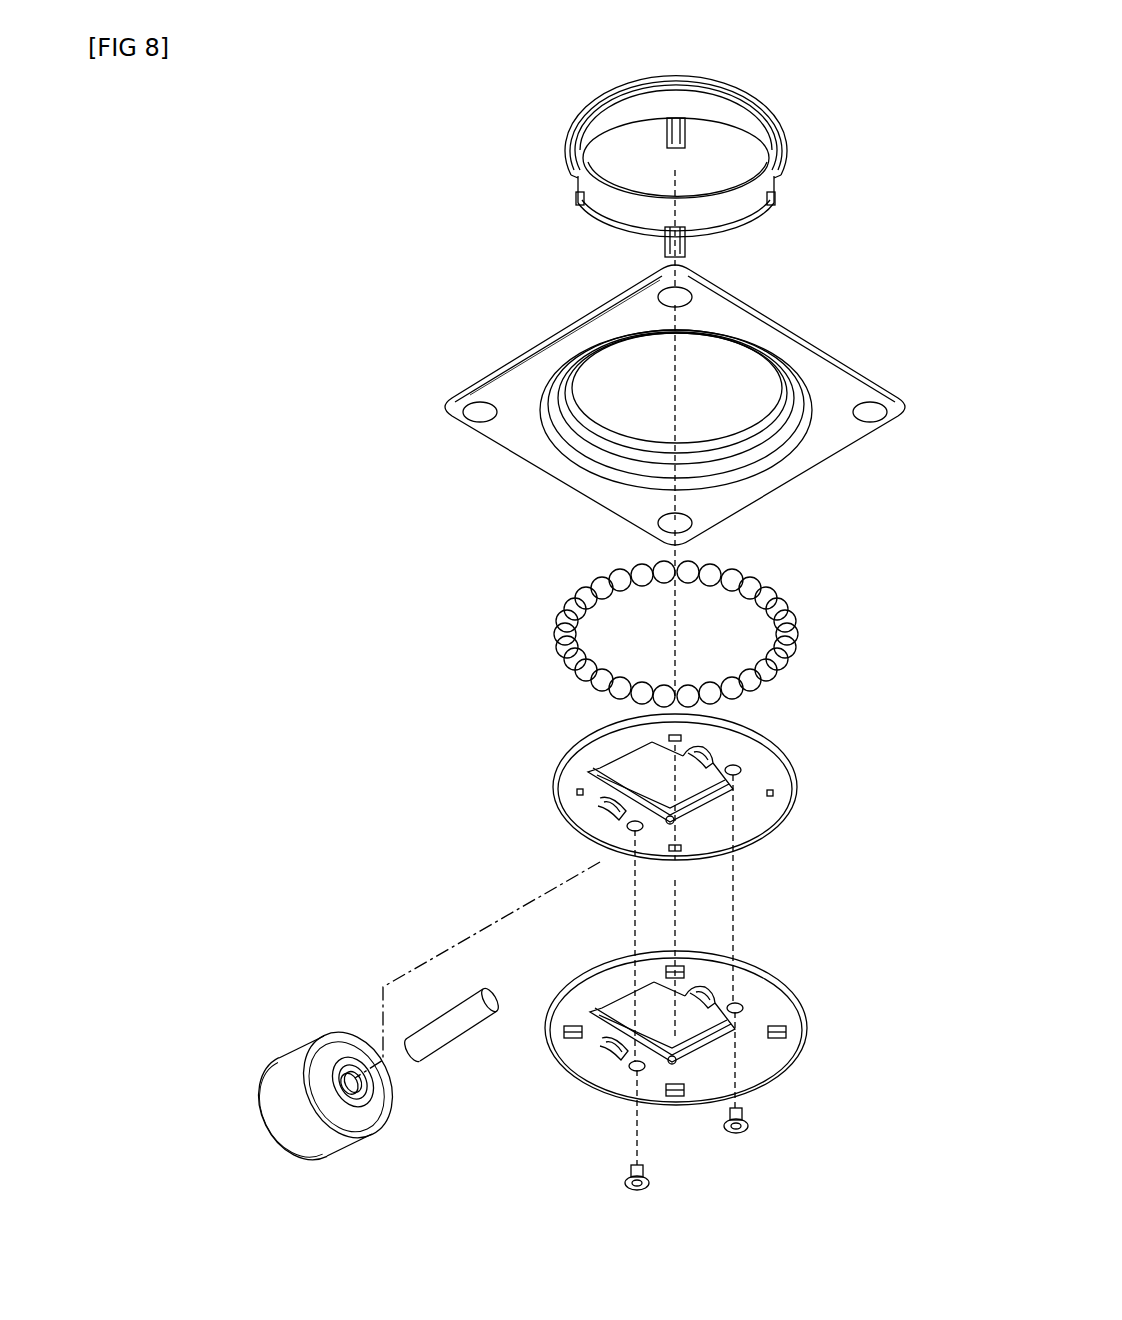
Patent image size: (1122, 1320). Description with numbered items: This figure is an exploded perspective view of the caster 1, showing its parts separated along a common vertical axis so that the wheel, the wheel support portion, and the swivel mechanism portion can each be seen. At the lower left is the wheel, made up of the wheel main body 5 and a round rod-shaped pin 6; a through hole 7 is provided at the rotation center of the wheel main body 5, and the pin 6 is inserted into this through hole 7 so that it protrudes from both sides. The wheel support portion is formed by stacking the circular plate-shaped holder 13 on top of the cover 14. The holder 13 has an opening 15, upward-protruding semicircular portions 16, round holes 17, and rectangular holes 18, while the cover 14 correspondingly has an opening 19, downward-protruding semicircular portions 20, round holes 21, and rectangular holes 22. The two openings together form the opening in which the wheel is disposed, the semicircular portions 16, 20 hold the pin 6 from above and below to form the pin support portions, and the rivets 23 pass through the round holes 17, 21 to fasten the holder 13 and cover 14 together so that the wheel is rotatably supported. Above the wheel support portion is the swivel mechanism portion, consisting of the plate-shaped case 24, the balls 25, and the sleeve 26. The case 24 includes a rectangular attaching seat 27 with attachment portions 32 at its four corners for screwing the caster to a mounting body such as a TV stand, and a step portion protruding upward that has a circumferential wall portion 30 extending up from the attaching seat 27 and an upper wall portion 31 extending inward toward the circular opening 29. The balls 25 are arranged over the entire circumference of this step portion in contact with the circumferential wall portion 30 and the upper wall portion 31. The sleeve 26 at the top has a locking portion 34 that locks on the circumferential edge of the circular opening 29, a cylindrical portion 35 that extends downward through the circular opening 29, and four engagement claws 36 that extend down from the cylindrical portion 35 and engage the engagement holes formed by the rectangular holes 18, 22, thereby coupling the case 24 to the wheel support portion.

The caster 1 is at (305, 293).
The wheel main body 5 is at (283, 1065).
The pin 6 is at (435, 1045).
The through hole 7 is at (350, 1078).
The holder 13 is at (785, 828).
The cover 14 is at (790, 1075).
The opening 15 is at (592, 780).
The semicircular portions 16 is at (710, 753).
The round holes 17 is at (742, 770).
The rectangular holes 18 is at (687, 737).
The opening 19 is at (600, 1000).
The semicircular portions 20 is at (607, 1058).
The round holes 21 is at (745, 1008).
The rectangular holes 22 is at (680, 965).
The rivets 23 is at (752, 1128).
The case 24 is at (815, 342).
The balls 25 is at (558, 610).
The sleeve 26 is at (785, 104).
The attaching seat 27 is at (520, 357).
The circular opening 29 is at (712, 432).
The circumferential wall portion 30 is at (577, 455).
The upper wall portion 31 is at (625, 432).
The attachment portions 32 is at (693, 297).
The locking portion 34 is at (563, 138).
The cylindrical portion 35 is at (612, 113).
The engagement claws 36 is at (687, 135).